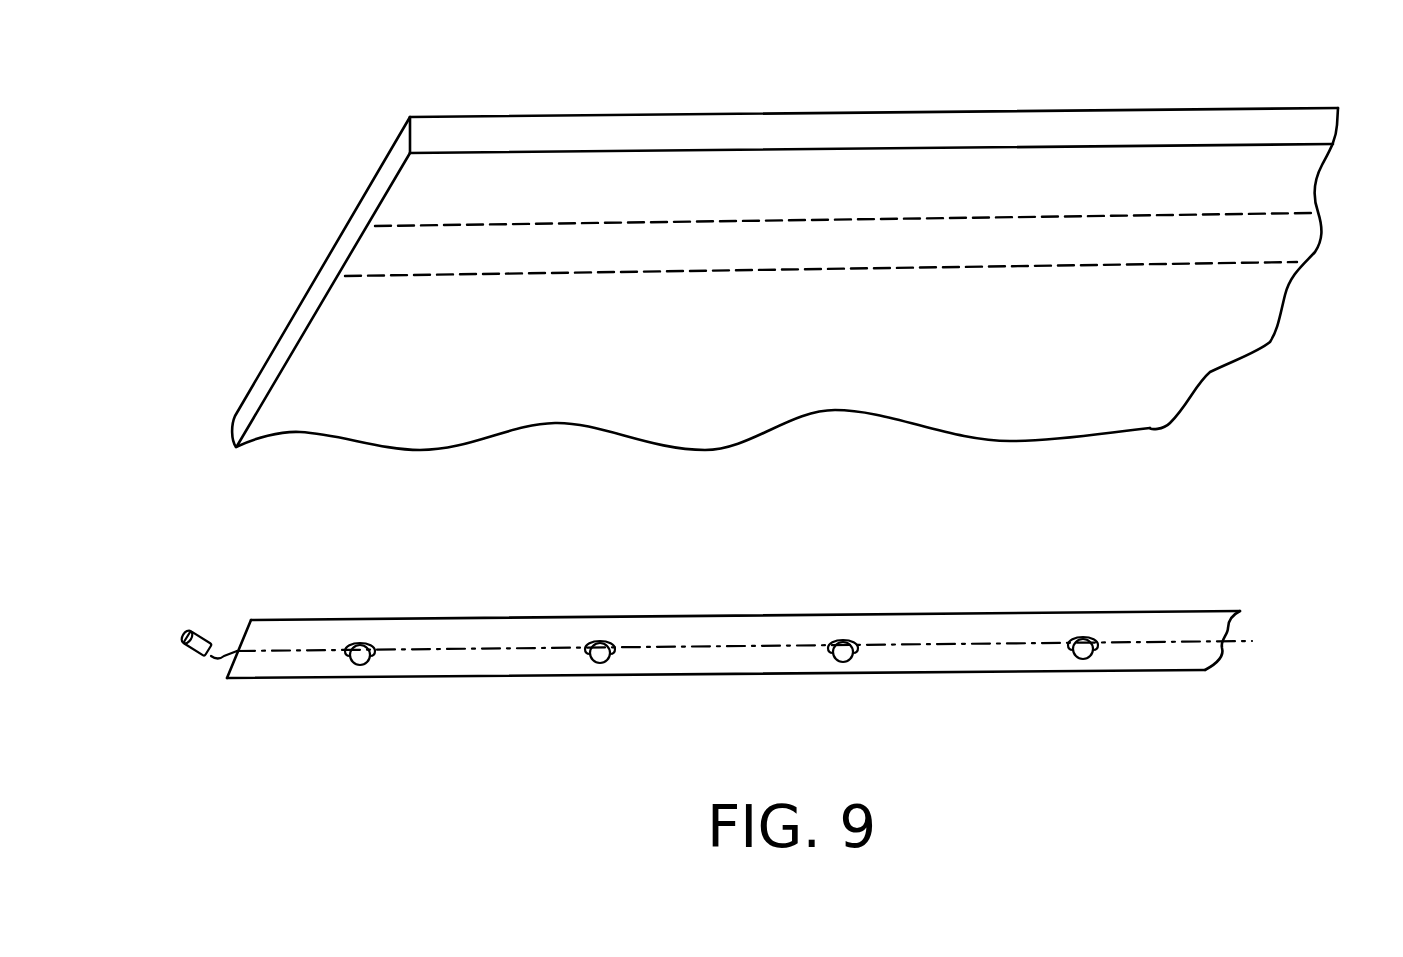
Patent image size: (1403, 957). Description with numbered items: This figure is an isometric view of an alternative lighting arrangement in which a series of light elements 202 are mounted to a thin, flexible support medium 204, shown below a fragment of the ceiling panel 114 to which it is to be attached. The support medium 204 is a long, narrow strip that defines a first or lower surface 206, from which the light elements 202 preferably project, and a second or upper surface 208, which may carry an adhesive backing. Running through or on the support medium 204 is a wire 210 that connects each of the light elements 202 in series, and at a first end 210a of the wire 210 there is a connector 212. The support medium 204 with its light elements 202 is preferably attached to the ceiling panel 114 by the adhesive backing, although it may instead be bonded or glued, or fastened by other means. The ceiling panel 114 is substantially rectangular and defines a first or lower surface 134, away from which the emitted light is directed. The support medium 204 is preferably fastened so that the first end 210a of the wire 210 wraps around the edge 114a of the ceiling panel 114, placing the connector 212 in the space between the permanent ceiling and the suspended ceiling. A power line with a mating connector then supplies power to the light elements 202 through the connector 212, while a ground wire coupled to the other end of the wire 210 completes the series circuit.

The ceiling panel 114 is at (1228, 102).
The edge of the ceiling panel 114a is at (360, 200).
The first or lower surface 134 is at (1302, 190).
The light elements 202 is at (366, 665).
The flexible support medium 204 is at (1205, 602).
The first or lower surface 206 is at (1163, 655).
The second or upper surface 208 is at (246, 628).
The wire 210 is at (748, 645).
The first end of the wire 210a is at (218, 662).
The connector 212 is at (184, 650).